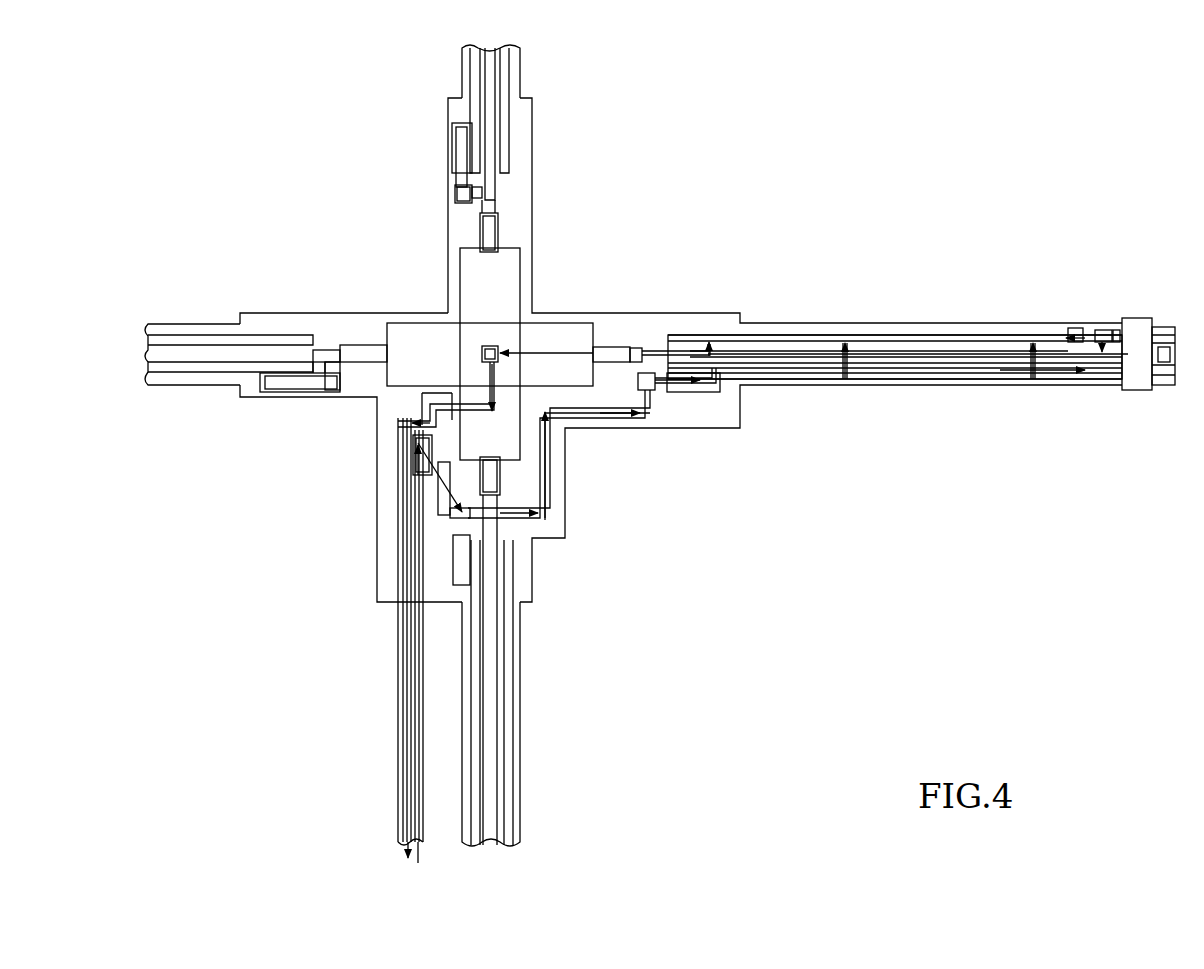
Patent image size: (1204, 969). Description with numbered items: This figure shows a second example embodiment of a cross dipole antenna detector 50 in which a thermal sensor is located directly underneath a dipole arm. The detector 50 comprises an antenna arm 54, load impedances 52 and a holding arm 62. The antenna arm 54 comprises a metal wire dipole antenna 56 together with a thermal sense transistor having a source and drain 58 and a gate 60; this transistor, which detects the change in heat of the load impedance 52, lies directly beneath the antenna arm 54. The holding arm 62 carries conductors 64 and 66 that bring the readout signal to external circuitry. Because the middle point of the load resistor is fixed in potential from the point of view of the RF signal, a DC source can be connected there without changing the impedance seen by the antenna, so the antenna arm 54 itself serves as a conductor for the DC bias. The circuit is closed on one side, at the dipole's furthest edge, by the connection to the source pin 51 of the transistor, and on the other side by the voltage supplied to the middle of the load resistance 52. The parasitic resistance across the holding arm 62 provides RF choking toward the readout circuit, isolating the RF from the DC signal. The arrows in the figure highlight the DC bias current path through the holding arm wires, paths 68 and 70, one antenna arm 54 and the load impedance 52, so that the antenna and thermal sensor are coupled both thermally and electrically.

The detector 50 is at (245, 657).
The source pin 51 is at (1102, 327).
The load impedance 52 is at (502, 285).
The antenna arm 54 is at (785, 386).
The metal wire dipole antenna 56 is at (650, 347).
The source and drain 58 is at (880, 335).
The gate 60 is at (952, 355).
The holding arm 62 is at (398, 790).
The conductor 64 is at (400, 633).
The conductor 66 is at (418, 645).
The path 68 is at (445, 513).
The path 70 is at (553, 468).